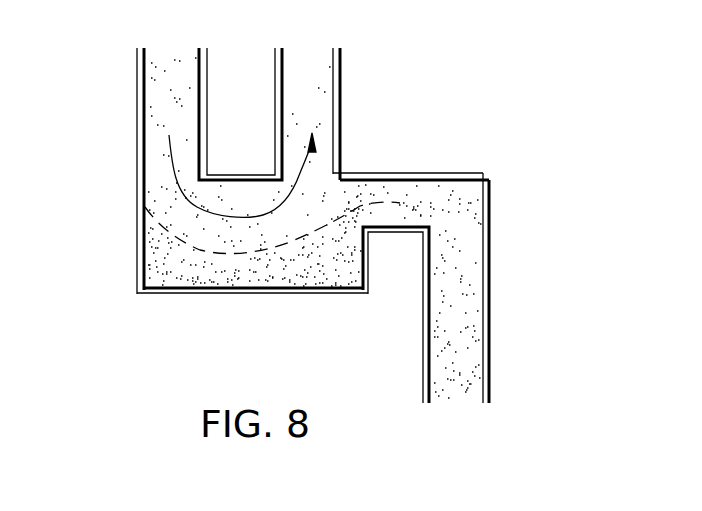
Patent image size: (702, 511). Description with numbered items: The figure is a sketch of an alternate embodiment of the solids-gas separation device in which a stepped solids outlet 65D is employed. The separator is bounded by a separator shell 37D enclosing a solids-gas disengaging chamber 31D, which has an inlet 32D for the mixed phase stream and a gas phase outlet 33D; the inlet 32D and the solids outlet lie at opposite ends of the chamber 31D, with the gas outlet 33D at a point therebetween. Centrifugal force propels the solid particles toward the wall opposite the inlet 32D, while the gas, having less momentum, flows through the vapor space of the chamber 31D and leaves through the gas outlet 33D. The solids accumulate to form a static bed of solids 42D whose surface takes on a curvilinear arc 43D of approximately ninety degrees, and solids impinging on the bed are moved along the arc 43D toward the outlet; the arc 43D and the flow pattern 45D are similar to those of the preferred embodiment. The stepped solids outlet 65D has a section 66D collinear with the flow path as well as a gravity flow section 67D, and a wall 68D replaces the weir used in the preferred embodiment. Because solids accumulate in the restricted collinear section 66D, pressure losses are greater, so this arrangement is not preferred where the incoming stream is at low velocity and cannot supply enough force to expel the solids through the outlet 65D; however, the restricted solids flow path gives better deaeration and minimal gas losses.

The solids-gas disengaging chamber 31D is at (260, 203).
The inlet 32D is at (160, 77).
The gas phase outlet 33D is at (315, 72).
The separator shell 37D is at (217, 172).
The static bed of solids 42D is at (277, 277).
The curvilinear arc 43D is at (182, 267).
The flow pattern 45D is at (308, 165).
The stepped solids outlet 65D is at (467, 215).
The collinear section 66D is at (408, 210).
The gravity flow section 67D is at (468, 315).
The wall 68D is at (371, 262).